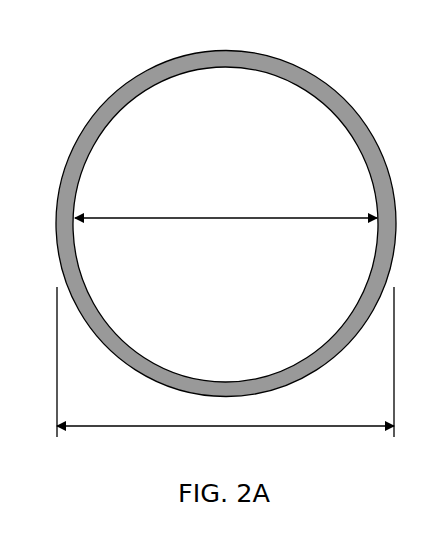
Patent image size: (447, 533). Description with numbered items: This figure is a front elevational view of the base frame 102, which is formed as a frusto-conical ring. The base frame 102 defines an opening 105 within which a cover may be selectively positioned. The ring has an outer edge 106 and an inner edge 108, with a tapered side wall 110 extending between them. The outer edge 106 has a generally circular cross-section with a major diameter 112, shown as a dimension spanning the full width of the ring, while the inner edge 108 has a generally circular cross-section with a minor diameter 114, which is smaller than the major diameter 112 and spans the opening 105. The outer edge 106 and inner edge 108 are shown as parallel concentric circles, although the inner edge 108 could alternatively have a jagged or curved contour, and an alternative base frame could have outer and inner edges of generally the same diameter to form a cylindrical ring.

The base frame 102 is at (92, 51).
The opening 105 is at (251, 91).
The outer edge 106 is at (320, 77).
The inner edge 108 is at (322, 100).
The tapered side wall 110 is at (72, 168).
The major diameter 112 is at (282, 426).
The minor diameter 114 is at (217, 218).